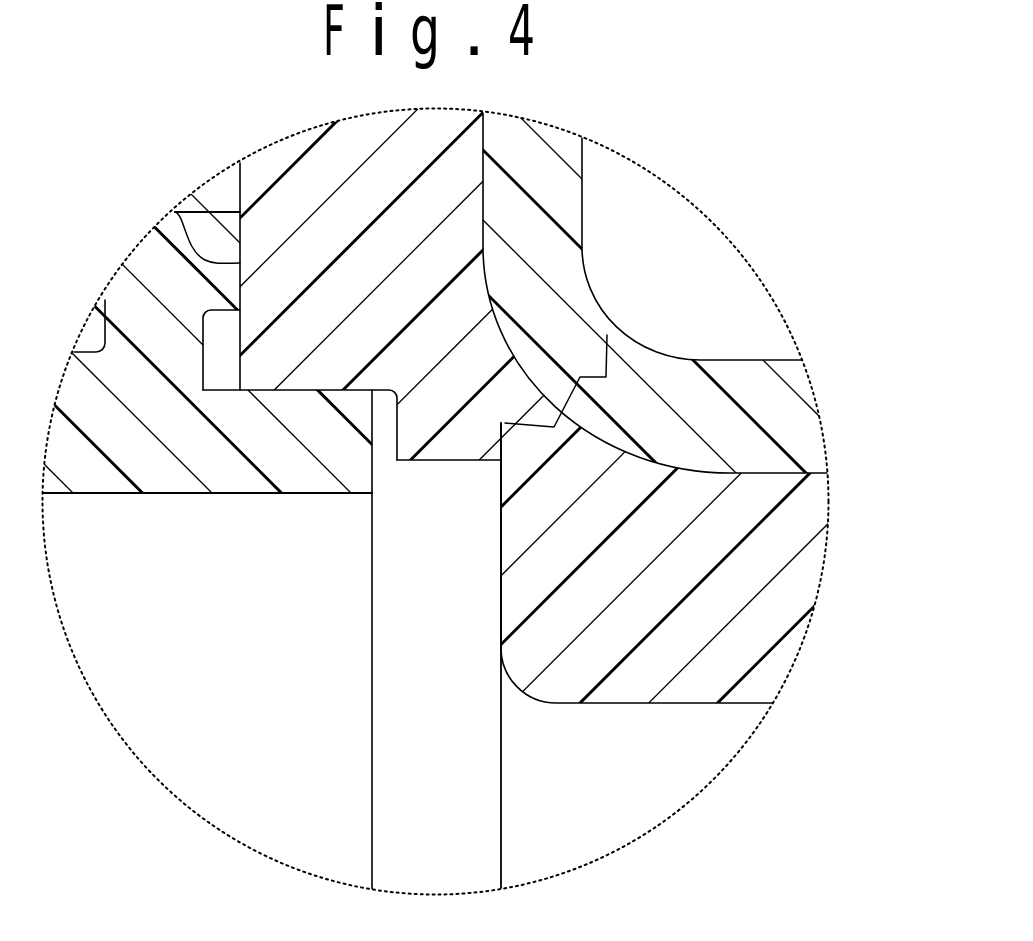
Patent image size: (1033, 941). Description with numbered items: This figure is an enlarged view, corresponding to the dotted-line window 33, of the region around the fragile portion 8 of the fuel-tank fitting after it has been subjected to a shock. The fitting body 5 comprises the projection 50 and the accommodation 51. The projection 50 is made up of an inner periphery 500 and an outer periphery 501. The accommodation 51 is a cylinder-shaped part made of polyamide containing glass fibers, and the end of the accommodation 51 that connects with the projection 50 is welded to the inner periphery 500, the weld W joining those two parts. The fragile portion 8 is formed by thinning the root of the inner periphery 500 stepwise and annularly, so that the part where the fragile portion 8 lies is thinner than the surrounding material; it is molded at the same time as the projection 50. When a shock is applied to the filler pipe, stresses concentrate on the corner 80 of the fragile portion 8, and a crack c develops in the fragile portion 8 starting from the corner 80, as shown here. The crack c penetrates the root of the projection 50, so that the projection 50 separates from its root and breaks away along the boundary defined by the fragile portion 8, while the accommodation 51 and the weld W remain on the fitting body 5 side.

The fitting body 5 is at (168, 180).
The weld W is at (175, 212).
The window 33 is at (738, 250).
The crack c is at (581, 375).
The outer periphery 501 is at (653, 413).
The corner 80 is at (500, 467).
The fragile portion 8 is at (517, 462).
The accommodation 51 is at (133, 546).
The inner periphery 500 is at (625, 700).
The projection 50 is at (797, 750).